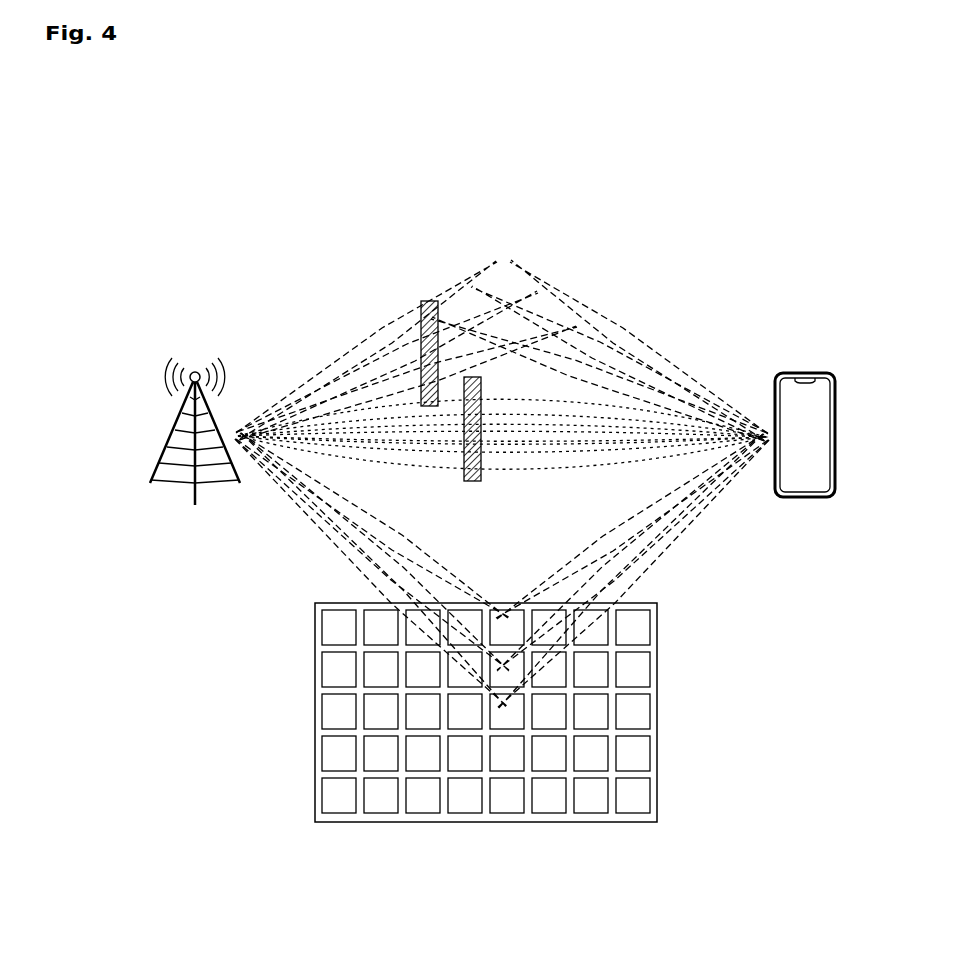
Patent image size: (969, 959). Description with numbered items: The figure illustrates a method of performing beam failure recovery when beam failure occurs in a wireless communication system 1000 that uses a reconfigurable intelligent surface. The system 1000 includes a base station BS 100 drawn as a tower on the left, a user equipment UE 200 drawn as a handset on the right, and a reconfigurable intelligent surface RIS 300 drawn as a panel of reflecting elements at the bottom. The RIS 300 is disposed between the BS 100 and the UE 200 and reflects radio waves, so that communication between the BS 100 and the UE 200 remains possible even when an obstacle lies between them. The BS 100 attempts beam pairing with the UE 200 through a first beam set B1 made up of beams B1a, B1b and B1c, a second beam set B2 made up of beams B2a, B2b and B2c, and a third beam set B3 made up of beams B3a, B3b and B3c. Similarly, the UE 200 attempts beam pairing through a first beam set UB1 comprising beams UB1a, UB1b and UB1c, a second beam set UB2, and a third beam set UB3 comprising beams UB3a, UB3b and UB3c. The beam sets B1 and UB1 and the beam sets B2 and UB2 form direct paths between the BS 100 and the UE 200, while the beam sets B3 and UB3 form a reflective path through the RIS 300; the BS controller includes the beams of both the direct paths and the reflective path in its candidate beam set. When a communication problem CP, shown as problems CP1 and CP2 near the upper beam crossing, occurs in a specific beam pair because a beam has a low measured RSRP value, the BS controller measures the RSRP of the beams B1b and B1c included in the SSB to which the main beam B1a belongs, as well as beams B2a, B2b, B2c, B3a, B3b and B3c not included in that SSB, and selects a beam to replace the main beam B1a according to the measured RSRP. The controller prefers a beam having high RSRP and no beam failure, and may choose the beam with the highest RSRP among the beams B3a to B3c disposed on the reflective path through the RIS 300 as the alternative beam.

The wireless communication system 1000 is at (814, 175).
The base station 100 is at (195, 460).
The base station BS is at (195, 460).
The user equipment 200 is at (805, 467).
The user equipment UE is at (805, 467).
The reconfigurable intelligent surface 300 is at (486, 739).
The reconfigurable intelligent surface RIS is at (486, 739).
The communication problem CP is at (490, 307).
The first communication problem CP1 is at (505, 385).
The second communication problem CP2 is at (505, 385).
The first beam set B1 is at (406, 313).
The first beam of first beam set B1a is at (383, 333).
The second beam of first beam set B1b is at (412, 350).
The third beam of first beam set B1c is at (449, 365).
The second beam set B2 is at (493, 363).
The first beam of second beam set B2a is at (347, 402).
The second beam of second beam set B2b is at (332, 420).
The third beam of second beam set B2c is at (355, 305).
The third beam set B3 is at (326, 590).
The first beam of third beam set B3a is at (278, 494).
The second beam of third beam set B3b is at (318, 520).
The third beam of third beam set B3c is at (343, 565).
The first UE beam set UB1 is at (599, 314).
The first beam of first UE beam set UB1a is at (667, 360).
The second beam of first UE beam set UB1b is at (618, 356).
The third beam of first UE beam set UB1c is at (665, 234).
The second UE beam set UB2 is at (698, 425).
The third UE beam set UB3 is at (674, 591).
The first beam of third UE beam set UB3a is at (718, 488).
The second beam of third UE beam set UB3b is at (690, 520).
The third beam of third UE beam set UB3c is at (633, 571).